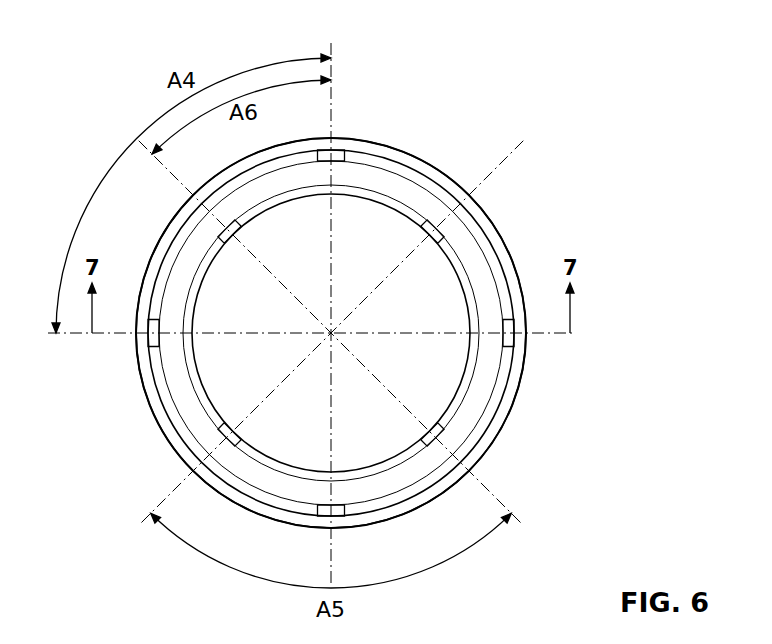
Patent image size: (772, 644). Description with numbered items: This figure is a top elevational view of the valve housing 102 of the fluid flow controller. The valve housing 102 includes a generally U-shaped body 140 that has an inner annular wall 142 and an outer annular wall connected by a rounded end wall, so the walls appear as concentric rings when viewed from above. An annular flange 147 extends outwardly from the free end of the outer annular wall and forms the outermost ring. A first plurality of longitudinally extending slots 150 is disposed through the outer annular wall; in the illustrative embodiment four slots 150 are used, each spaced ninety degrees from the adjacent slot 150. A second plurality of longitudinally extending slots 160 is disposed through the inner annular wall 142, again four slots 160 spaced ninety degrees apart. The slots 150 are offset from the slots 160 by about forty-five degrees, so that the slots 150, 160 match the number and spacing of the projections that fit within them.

The valve housing 102 is at (108, 44).
The generally U-shaped body 140 is at (473, 204).
The inner annular wall 142 is at (385, 203).
The annular flange 147 is at (505, 242).
The first plurality of longitudinally extending slots 150 is at (350, 153).
The second plurality of longitudinally extending slots 160 is at (222, 232).